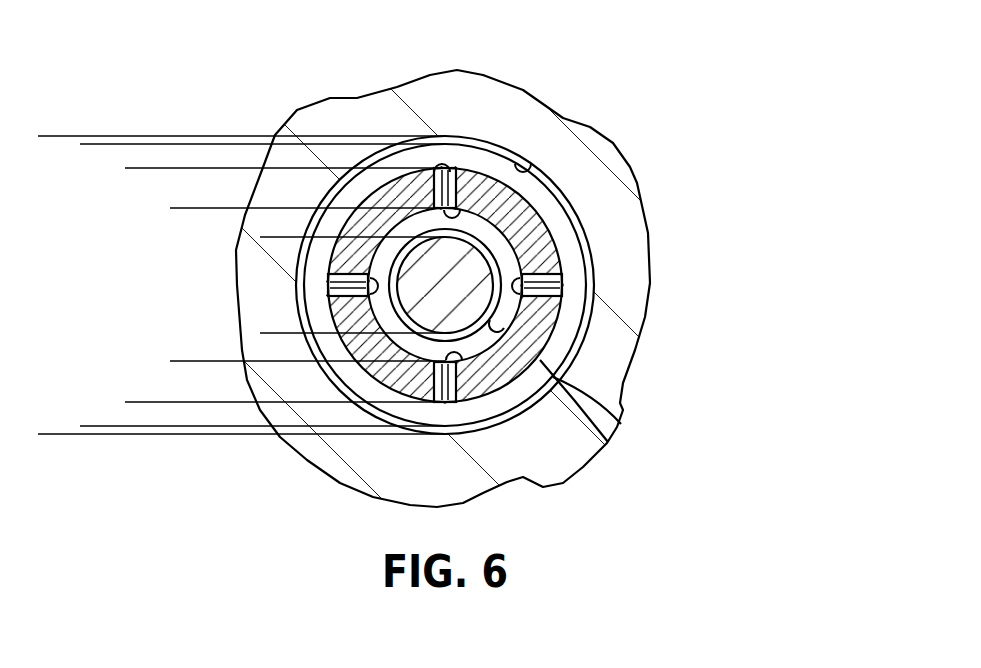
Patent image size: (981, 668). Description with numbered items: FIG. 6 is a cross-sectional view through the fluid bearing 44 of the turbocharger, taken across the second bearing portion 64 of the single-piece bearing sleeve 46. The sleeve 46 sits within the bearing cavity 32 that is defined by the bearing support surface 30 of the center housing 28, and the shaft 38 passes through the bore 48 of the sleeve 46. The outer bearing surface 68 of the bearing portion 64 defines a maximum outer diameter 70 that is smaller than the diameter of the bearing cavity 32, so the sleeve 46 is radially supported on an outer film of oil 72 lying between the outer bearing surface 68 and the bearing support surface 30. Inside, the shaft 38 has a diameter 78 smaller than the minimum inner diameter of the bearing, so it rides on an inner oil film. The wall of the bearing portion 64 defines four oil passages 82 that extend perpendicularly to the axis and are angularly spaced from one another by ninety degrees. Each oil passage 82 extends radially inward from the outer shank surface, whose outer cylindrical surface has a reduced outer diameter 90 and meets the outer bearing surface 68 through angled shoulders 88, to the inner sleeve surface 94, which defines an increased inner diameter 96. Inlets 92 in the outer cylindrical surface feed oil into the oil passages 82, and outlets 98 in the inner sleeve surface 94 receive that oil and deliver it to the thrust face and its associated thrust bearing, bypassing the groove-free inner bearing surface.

The center housing 28 is at (577, 85).
The bearing support surface 30 is at (565, 126).
The bearing cavity 32 is at (53, 136).
The shaft 38 is at (463, 233).
The fluid bearing 44 is at (505, 150).
The single-piece bearing sleeve 46 is at (539, 200).
The bore 48 is at (397, 170).
The second bearing portion 64 is at (218, 78).
The outer bearing surface 68 is at (623, 405).
The maximum outer diameter 70 is at (93, 144).
The outer film of oil 72 is at (612, 445).
The diameter of the shaft 78 is at (273, 237).
The oil passages 82 is at (330, 272).
The shoulders 88 is at (562, 241).
The reduced outer diameter 90 is at (137, 168).
The inlets 92 is at (416, 220).
The inner sleeve surface 94 is at (560, 368).
The increased inner diameter 96 is at (179, 208).
The outlets 98 is at (460, 170).